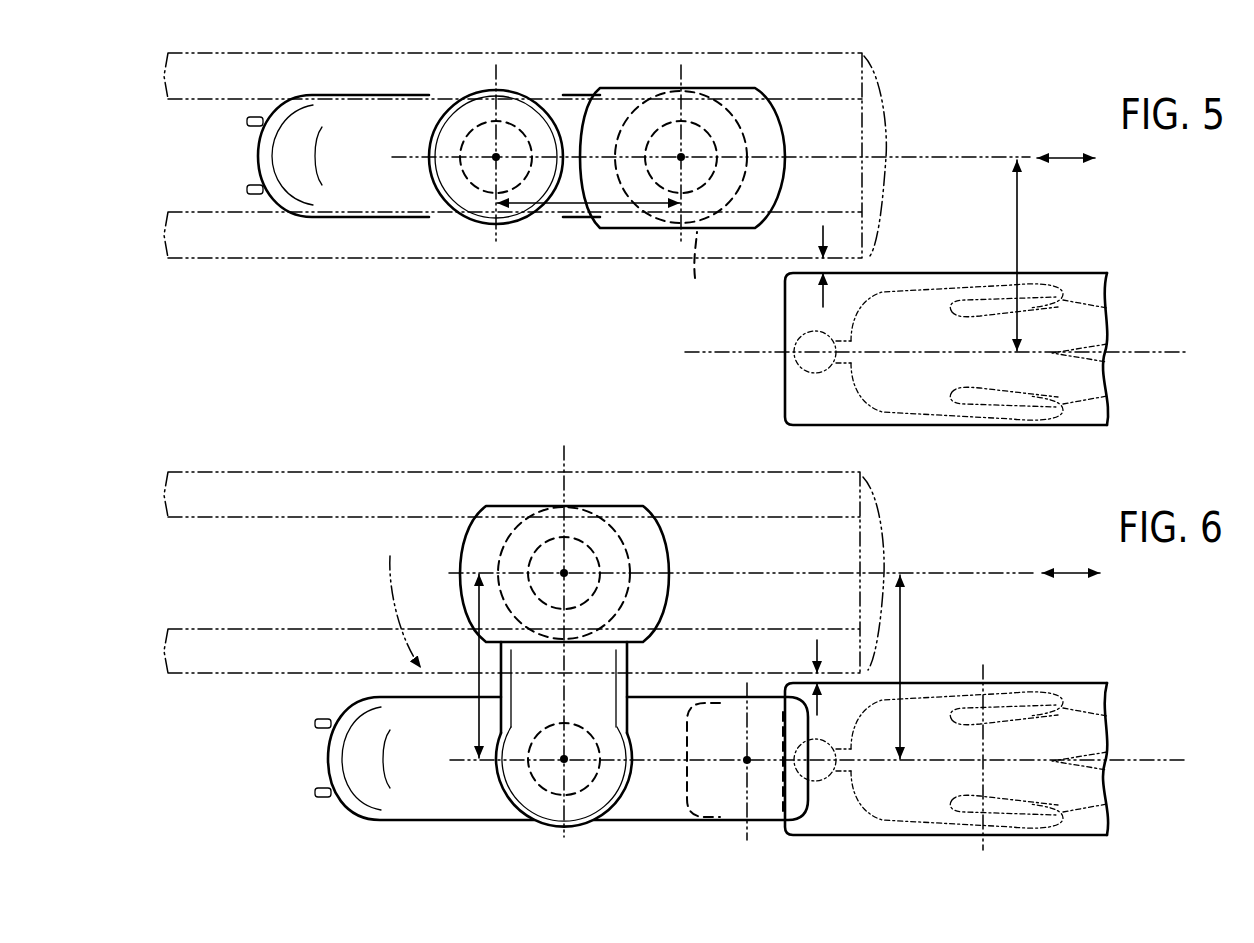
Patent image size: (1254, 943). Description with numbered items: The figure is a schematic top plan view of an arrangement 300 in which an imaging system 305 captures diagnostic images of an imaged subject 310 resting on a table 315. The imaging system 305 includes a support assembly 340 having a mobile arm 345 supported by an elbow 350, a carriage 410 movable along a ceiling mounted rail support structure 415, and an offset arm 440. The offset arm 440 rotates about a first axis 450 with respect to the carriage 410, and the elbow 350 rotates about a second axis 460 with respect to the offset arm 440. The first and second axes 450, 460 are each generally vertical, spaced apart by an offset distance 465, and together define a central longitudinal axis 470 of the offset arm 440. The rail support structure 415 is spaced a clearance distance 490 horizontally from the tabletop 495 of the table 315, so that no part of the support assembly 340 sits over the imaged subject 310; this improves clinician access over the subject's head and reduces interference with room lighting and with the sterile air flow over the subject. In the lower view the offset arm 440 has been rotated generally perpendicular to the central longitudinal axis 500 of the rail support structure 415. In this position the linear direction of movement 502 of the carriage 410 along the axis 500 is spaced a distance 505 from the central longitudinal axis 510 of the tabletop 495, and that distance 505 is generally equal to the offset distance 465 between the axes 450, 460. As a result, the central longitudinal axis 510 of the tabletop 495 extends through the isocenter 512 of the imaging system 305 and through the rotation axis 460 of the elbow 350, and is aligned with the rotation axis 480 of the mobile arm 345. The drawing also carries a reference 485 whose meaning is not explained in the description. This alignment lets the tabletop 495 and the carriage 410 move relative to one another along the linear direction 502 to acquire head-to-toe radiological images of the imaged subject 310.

In FIG. 5, the arrangement 300 is at (1080, 220).
In FIG. 6, the arrangement 300 is at (1122, 608).
In FIG. 5, the imaging system 305 is at (570, 272).
In FIG. 6, the imaging system 305 is at (353, 606).
In FIG. 5, the imaged subject 310 is at (913, 412).
In FIG. 6, the imaged subject 310 is at (912, 828).
In FIG. 5, the table 315 is at (1045, 271).
In FIG. 6, the table 315 is at (1032, 679).
In FIG. 5, the support assembly 340 is at (749, 51).
In FIG. 5, the mobile arm 345 is at (696, 269).
In FIG. 6, the mobile arm 345 is at (690, 699).
In FIG. 5, the elbow 350 is at (388, 220).
In FIG. 6, the elbow 350 is at (430, 821).
In FIG. 5, the carriage 410 is at (786, 129).
In FIG. 6, the carriage 410 is at (672, 576).
In FIG. 5, the rail support structure 415 is at (891, 112).
In FIG. 6, the rail support structure 415 is at (889, 538).
In FIG. 5, the offset arm 440 is at (515, 228).
In FIG. 6, the offset arm 440 is at (628, 652).
In FIG. 5, the first axis 450 is at (673, 147).
In FIG. 6, the first axis 450 is at (573, 565).
In FIG. 5, the second axis 460 is at (488, 148).
In FIG. 6, the second axis 460 is at (557, 767).
In FIG. 5, the offset distance 465 is at (562, 220).
In FIG. 6, the offset distance 465 is at (478, 718).
In FIG. 5, the central longitudinal axis of the offset arm 470 is at (546, 150).
In FIG. 6, the central longitudinal axis of the offset arm 470 is at (567, 462).
In FIG. 5, the rotation axis of the mobile arm 480 is at (683, 70).
In FIG. 6, the rotation axis of the mobile arm 480 is at (746, 830).
In FIG. 6, the detector housing 485 is at (660, 752).
In FIG. 5, the clearance distance 490 is at (822, 236).
In FIG. 6, the clearance distance 490 is at (814, 650).
In FIG. 5, the tabletop 495 is at (910, 272).
In FIG. 6, the tabletop 495 is at (1088, 692).
In FIG. 5, the central longitudinal axis of the rail support structure 500 is at (957, 162).
In FIG. 6, the central longitudinal axis of the rail support structure 500 is at (937, 573).
In FIG. 5, the linear direction of movement 502 is at (1065, 157).
In FIG. 6, the linear direction of movement 502 is at (1068, 573).
In FIG. 5, the distance 505 is at (1019, 246).
In FIG. 6, the distance 505 is at (902, 605).
In FIG. 5, the central longitudinal axis of the tabletop 510 is at (893, 354).
In FIG. 6, the central longitudinal axis of the tabletop 510 is at (878, 764).
In FIG. 6, the isocenter 512 is at (741, 766).